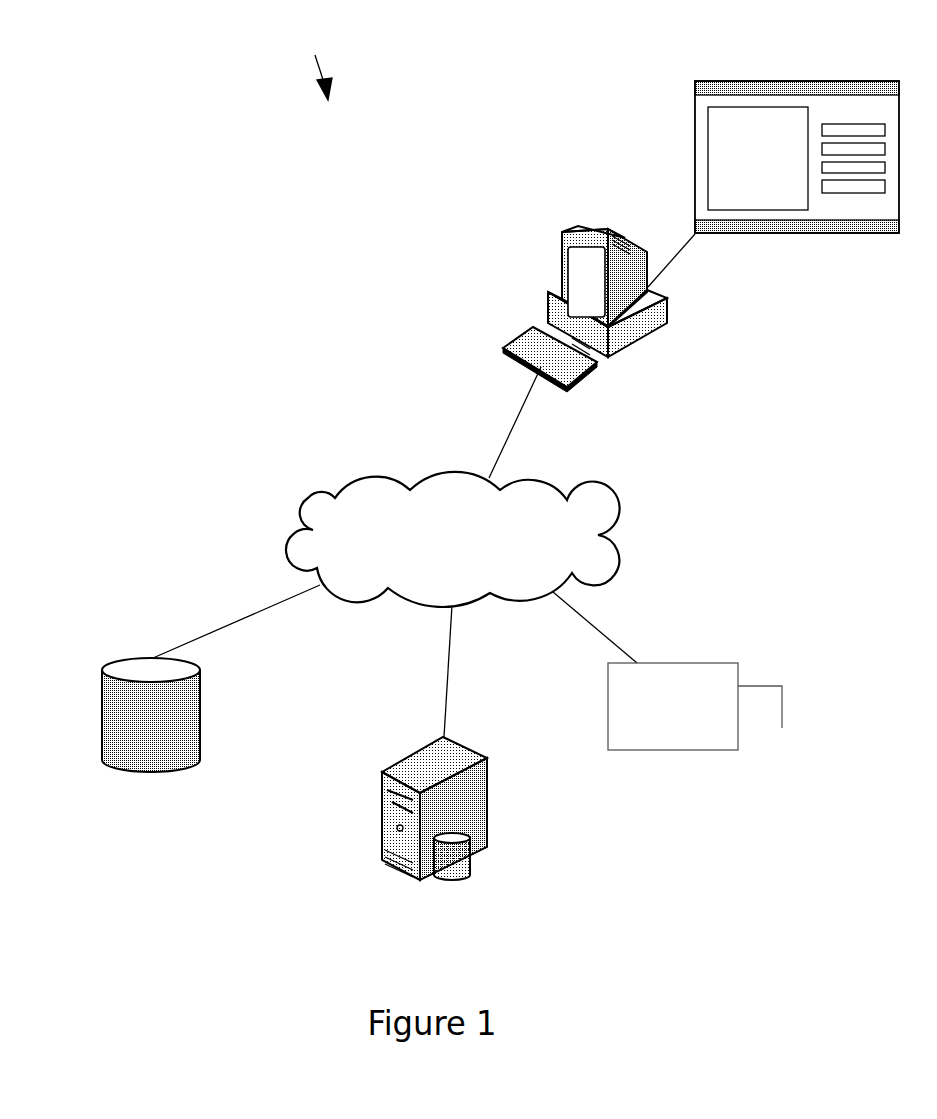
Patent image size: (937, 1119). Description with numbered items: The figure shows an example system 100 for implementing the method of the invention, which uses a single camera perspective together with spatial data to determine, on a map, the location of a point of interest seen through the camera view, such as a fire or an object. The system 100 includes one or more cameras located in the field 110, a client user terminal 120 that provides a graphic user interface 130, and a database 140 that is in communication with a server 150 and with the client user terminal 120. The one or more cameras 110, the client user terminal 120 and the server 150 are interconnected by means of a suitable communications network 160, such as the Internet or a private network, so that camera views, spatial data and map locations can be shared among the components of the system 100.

The system 100 is at (313, 60).
The cameras located in the field 110 is at (722, 662).
The client user terminal 120 is at (587, 228).
The graphic user interface 130 is at (813, 81).
The database 140 is at (105, 742).
The server 150 is at (487, 807).
The communications network 160 is at (309, 498).